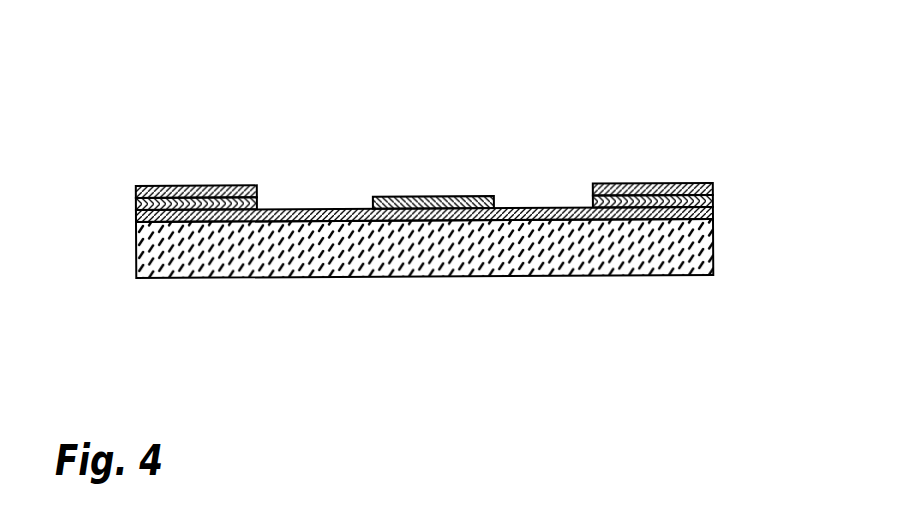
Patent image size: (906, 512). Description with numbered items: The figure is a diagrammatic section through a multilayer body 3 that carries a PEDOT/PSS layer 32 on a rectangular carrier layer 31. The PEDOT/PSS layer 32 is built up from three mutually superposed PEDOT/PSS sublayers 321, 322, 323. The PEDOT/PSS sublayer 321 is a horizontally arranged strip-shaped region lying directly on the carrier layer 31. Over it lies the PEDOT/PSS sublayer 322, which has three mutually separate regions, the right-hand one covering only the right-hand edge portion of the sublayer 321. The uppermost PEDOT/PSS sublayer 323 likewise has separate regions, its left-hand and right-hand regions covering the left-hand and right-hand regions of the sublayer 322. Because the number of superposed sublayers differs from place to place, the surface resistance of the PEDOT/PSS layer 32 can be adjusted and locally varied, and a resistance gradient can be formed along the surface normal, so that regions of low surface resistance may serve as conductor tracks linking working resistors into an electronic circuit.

The multilayer body 3 is at (560, 106).
The carrier layer 31 is at (703, 245).
The PEDOT/PSS layer 32 is at (162, 172).
The first PEDOT/PSS sublayer 321 is at (713, 211).
The second PEDOT/PSS sublayer 322 is at (472, 130).
The third PEDOT/PSS sublayer 323 is at (200, 186).